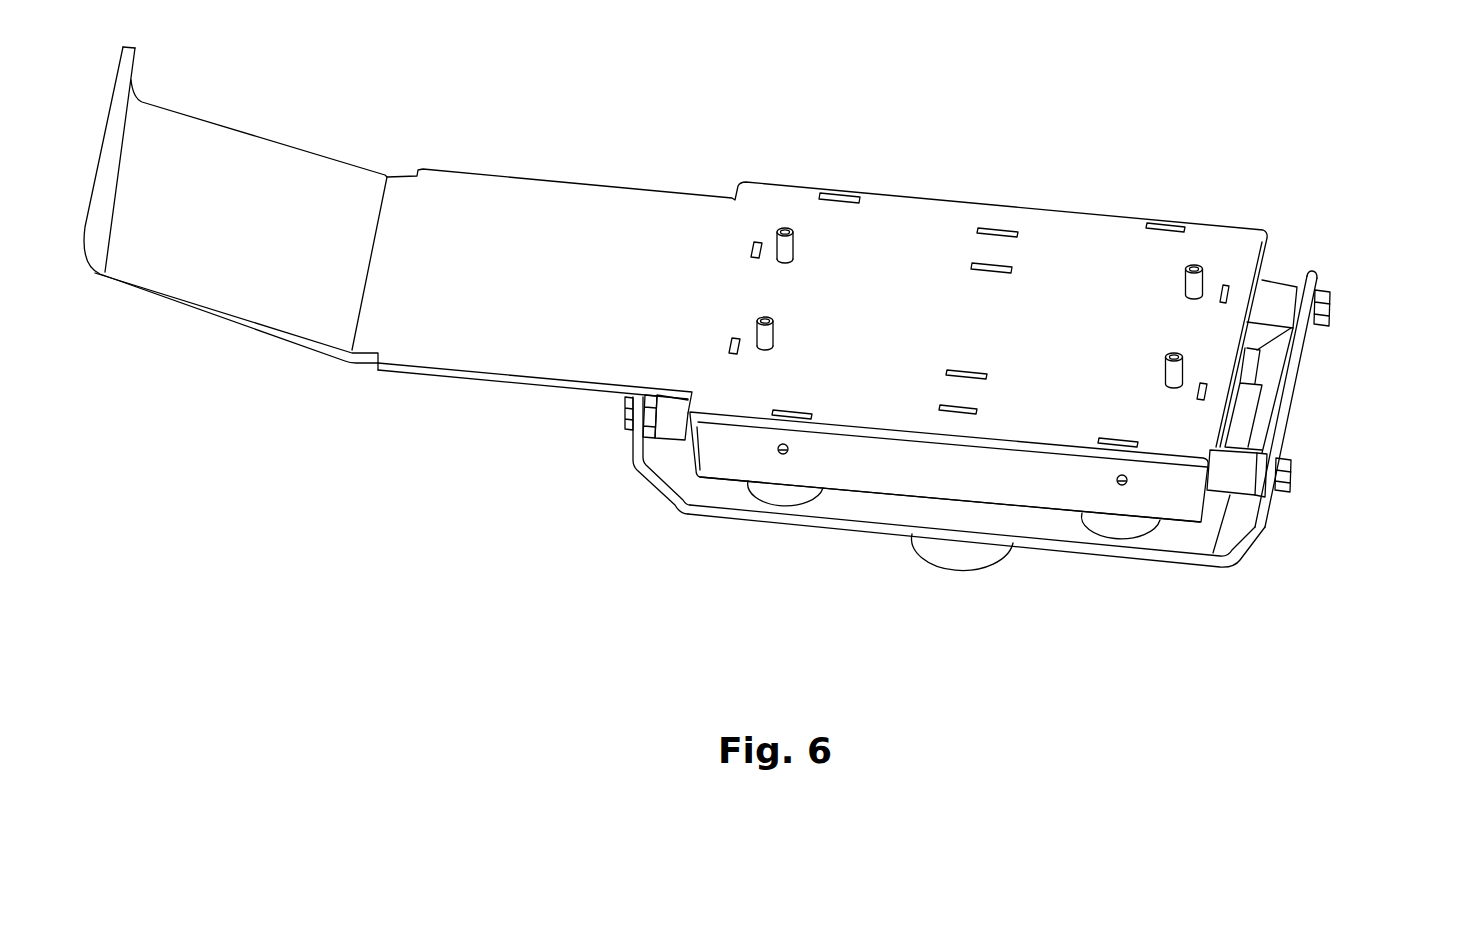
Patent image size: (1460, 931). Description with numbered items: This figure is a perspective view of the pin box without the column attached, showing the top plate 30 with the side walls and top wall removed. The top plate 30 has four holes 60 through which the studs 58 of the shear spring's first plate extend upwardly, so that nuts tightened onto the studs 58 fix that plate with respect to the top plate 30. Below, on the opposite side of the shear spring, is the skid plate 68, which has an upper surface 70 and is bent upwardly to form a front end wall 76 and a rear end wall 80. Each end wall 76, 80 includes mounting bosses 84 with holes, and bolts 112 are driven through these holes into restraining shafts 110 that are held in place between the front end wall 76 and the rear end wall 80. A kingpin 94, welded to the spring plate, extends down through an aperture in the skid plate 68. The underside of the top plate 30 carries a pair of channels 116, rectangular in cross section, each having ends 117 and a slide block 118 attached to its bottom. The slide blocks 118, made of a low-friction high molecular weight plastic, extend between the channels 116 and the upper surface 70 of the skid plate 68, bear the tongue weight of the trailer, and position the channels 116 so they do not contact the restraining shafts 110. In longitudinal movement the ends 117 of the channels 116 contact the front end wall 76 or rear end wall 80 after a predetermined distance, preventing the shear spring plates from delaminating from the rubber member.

The top plate 30 is at (943, 226).
The studs 58 is at (765, 317).
The holes 60 is at (793, 260).
The skid plate 68 is at (862, 528).
The upper surface 70 is at (727, 499).
The front end wall 76 is at (1292, 420).
The rear end wall 80 is at (632, 457).
The mounting bosses 84 is at (1298, 287).
The kingpin 94 is at (966, 567).
The restraining shafts 110 is at (1277, 292).
The bolts 112 is at (626, 410).
The channels 116 is at (1042, 490).
The ends 117 is at (697, 428).
The slide block 118 is at (790, 500).